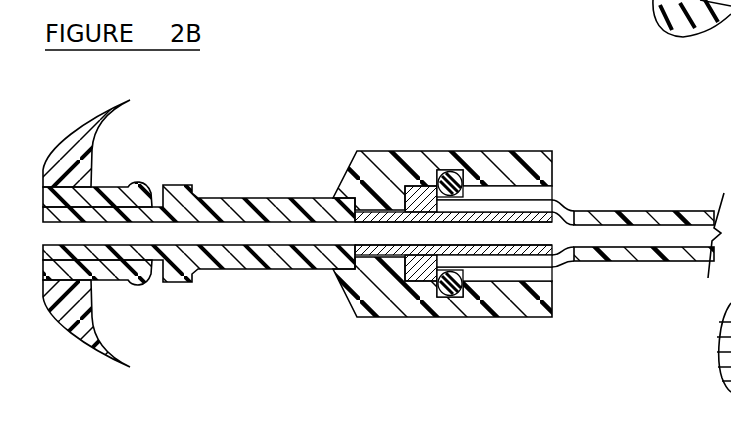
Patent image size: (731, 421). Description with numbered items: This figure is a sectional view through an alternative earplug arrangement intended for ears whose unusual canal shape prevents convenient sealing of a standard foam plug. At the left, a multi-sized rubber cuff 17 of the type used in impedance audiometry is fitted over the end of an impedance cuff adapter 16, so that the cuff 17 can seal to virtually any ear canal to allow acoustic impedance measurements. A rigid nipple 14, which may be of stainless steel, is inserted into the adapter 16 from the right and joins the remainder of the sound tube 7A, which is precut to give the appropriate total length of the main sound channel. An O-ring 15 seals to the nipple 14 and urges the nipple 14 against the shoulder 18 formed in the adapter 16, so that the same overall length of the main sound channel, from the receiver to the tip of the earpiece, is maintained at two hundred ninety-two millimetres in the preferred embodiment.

The rubber cuff 17 is at (98, 142).
The impedance cuff adapter 16 is at (232, 199).
The O-ring 15 is at (447, 168).
The nipple 14 is at (543, 203).
The sound tube 7A is at (644, 204).
The shoulder 18 is at (352, 254).